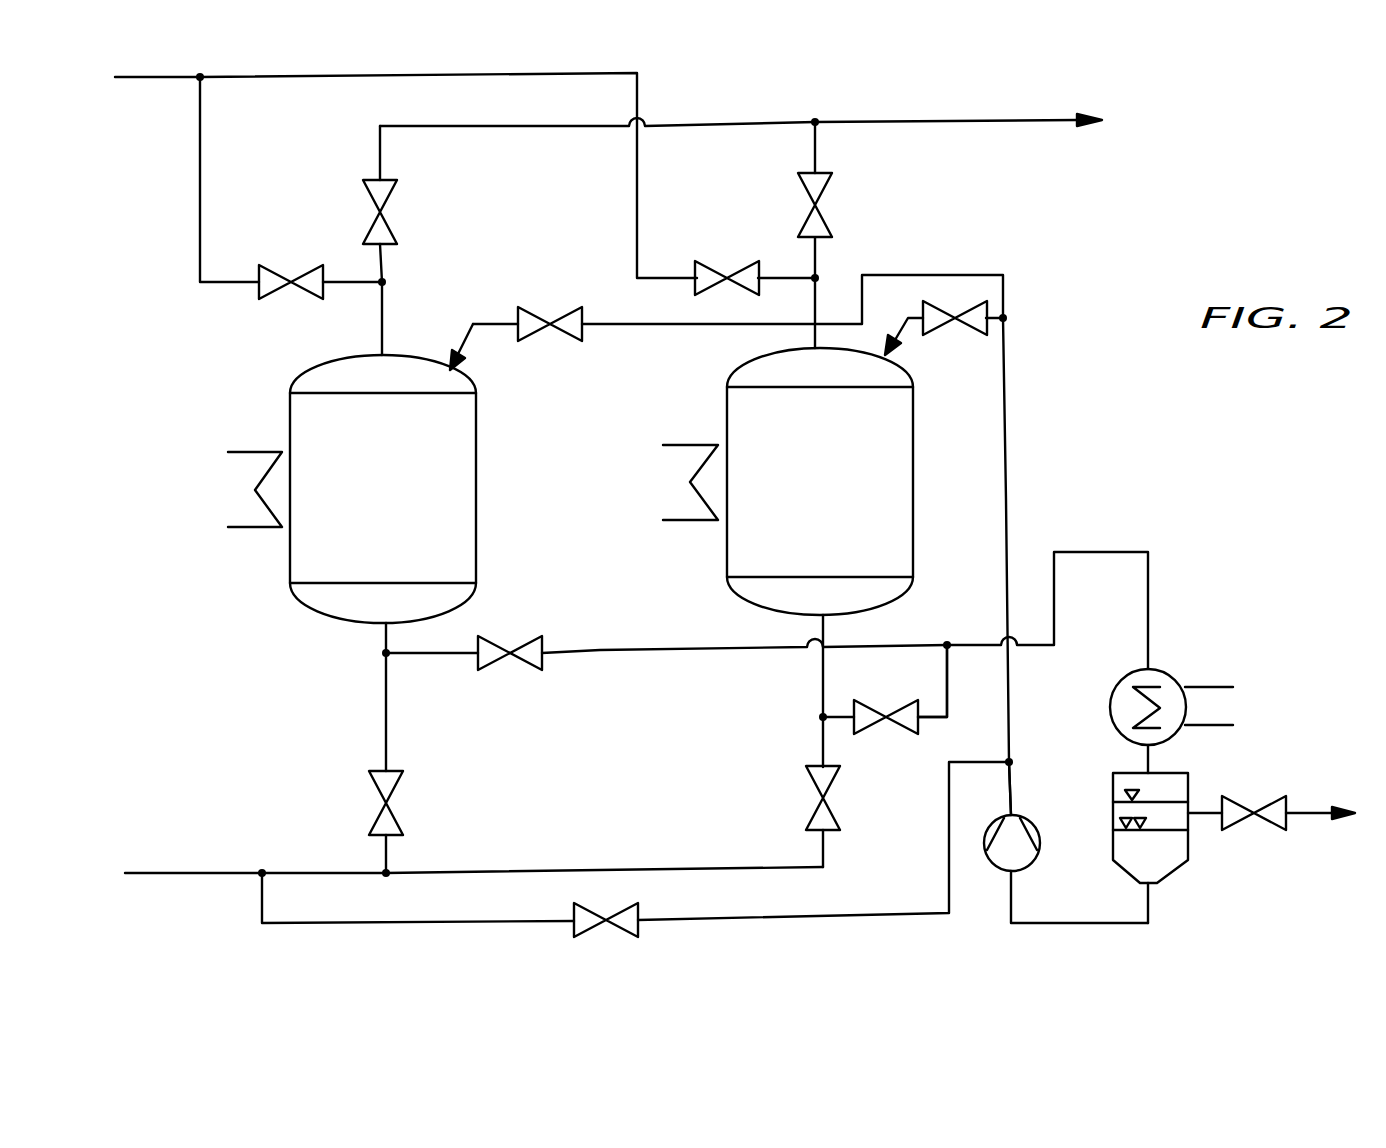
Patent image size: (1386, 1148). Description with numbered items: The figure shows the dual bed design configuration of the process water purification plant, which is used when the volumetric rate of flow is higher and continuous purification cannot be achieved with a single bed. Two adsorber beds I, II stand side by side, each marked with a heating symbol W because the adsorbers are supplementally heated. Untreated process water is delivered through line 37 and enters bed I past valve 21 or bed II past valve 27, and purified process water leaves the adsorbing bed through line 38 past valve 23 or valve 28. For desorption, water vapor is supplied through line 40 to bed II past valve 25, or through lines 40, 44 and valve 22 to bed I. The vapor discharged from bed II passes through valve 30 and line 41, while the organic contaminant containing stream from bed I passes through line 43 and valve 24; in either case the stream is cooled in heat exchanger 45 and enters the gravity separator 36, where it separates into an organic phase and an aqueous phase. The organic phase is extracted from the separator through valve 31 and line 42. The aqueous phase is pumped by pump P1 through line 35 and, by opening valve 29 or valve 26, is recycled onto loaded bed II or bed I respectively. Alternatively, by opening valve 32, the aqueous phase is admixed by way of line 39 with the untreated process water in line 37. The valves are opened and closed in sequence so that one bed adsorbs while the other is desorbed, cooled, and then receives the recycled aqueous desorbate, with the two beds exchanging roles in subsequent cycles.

The valve 21 is at (372, 786).
The valve 22 is at (278, 266).
The valve 23 is at (394, 194).
The valve 24 is at (490, 673).
The valve 25 is at (714, 260).
The valve 26 is at (570, 315).
The valve 27 is at (808, 782).
The valve 28 is at (832, 189).
The valve 29 is at (968, 305).
The valve 30 is at (904, 734).
The valve 31 is at (1268, 808).
The valve 32 is at (622, 867).
The line 35 is at (1068, 923).
The gravity separator 36 is at (1185, 860).
The line 37 is at (183, 873).
The line 38 is at (553, 130).
The line 39 is at (485, 923).
The line 40 is at (142, 82).
The line 41 is at (950, 688).
The line 42 is at (1313, 808).
The line 43 is at (630, 650).
The line 44 is at (200, 199).
The cooling heat exchanger 45 is at (1170, 676).
The pump P1 is at (1035, 832).
The bed I is at (290, 412).
The bed II is at (727, 408).
The heating/cooling jacket W is at (240, 452).